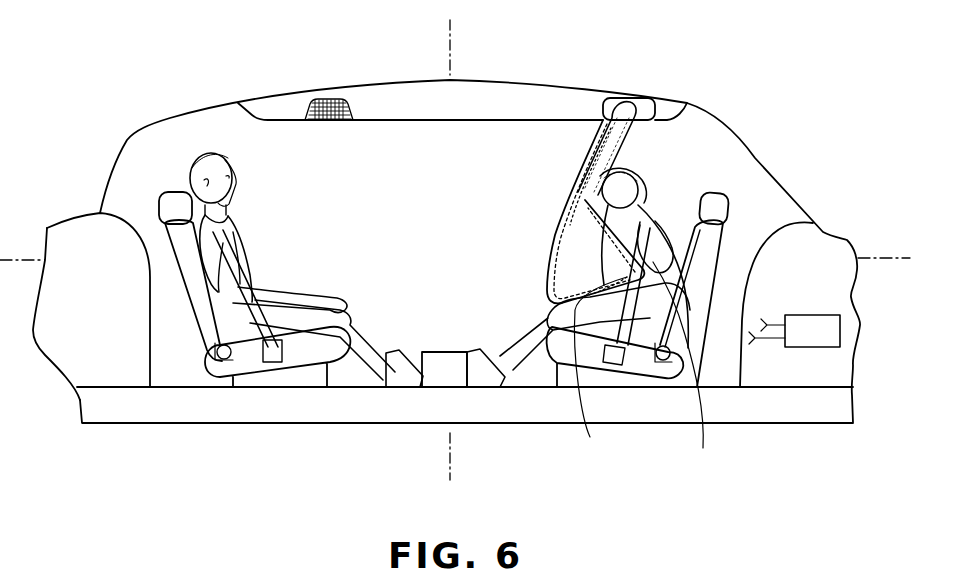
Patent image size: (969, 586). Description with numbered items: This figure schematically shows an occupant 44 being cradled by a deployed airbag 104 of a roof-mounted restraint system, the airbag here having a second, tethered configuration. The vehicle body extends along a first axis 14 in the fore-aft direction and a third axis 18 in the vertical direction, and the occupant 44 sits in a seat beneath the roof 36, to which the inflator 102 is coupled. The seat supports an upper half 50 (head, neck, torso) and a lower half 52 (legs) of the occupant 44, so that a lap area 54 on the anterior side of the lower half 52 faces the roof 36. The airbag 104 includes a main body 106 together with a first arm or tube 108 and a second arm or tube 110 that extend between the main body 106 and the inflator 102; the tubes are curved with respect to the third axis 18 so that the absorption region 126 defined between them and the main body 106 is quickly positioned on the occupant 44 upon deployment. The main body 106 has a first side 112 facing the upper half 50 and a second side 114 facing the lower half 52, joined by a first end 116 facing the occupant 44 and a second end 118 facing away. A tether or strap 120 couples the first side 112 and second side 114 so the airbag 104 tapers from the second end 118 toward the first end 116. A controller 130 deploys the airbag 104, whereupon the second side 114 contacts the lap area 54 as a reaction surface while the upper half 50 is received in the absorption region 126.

The first axis 14 is at (868, 258).
The third axis 18 is at (452, 56).
The roof 36 is at (375, 78).
The occupant 44 is at (690, 228).
The upper half 50 is at (668, 283).
The lower half 52 is at (528, 305).
The lap area 54 is at (565, 295).
The inflator 102 is at (648, 106).
The airbag 104 is at (589, 288).
The main body 106 is at (548, 242).
The first arm or tube 108 is at (628, 152).
The second arm or tube 110 is at (585, 185).
The first side 112 is at (634, 197).
The second side 114 is at (600, 371).
The first end 116 is at (688, 368).
The second end 118 is at (547, 258).
The tether or strap 120 is at (656, 262).
The impact or absorption region 126 is at (625, 180).
The controller 130 is at (818, 333).